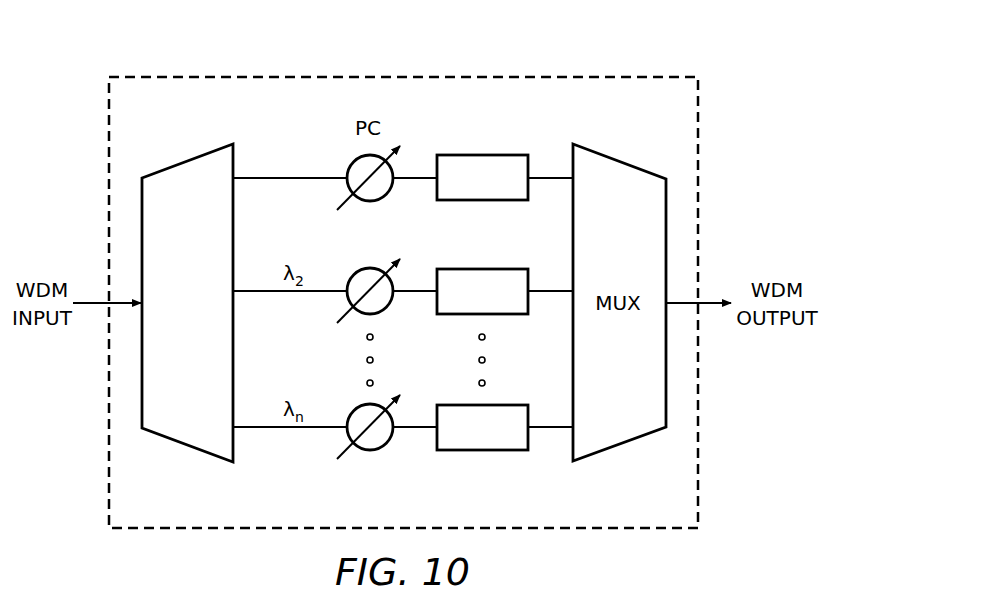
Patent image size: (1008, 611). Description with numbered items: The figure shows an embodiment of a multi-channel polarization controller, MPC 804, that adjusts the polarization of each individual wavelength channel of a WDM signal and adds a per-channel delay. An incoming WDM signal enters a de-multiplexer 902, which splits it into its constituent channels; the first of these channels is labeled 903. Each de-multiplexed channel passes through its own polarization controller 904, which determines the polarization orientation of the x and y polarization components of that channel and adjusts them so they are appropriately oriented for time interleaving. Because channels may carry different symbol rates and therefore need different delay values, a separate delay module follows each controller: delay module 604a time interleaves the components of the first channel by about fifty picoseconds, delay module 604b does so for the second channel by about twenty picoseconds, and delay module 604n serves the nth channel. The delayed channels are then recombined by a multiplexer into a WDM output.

The MPC 804 is at (435, 76).
The de-multiplexer 902 is at (184, 160).
The wavelength channel 903 is at (290, 179).
The polarization controller 904 is at (370, 201).
The delay module 604a is at (487, 154).
The delay module 604b is at (487, 268).
The delay element 604n is at (487, 451).